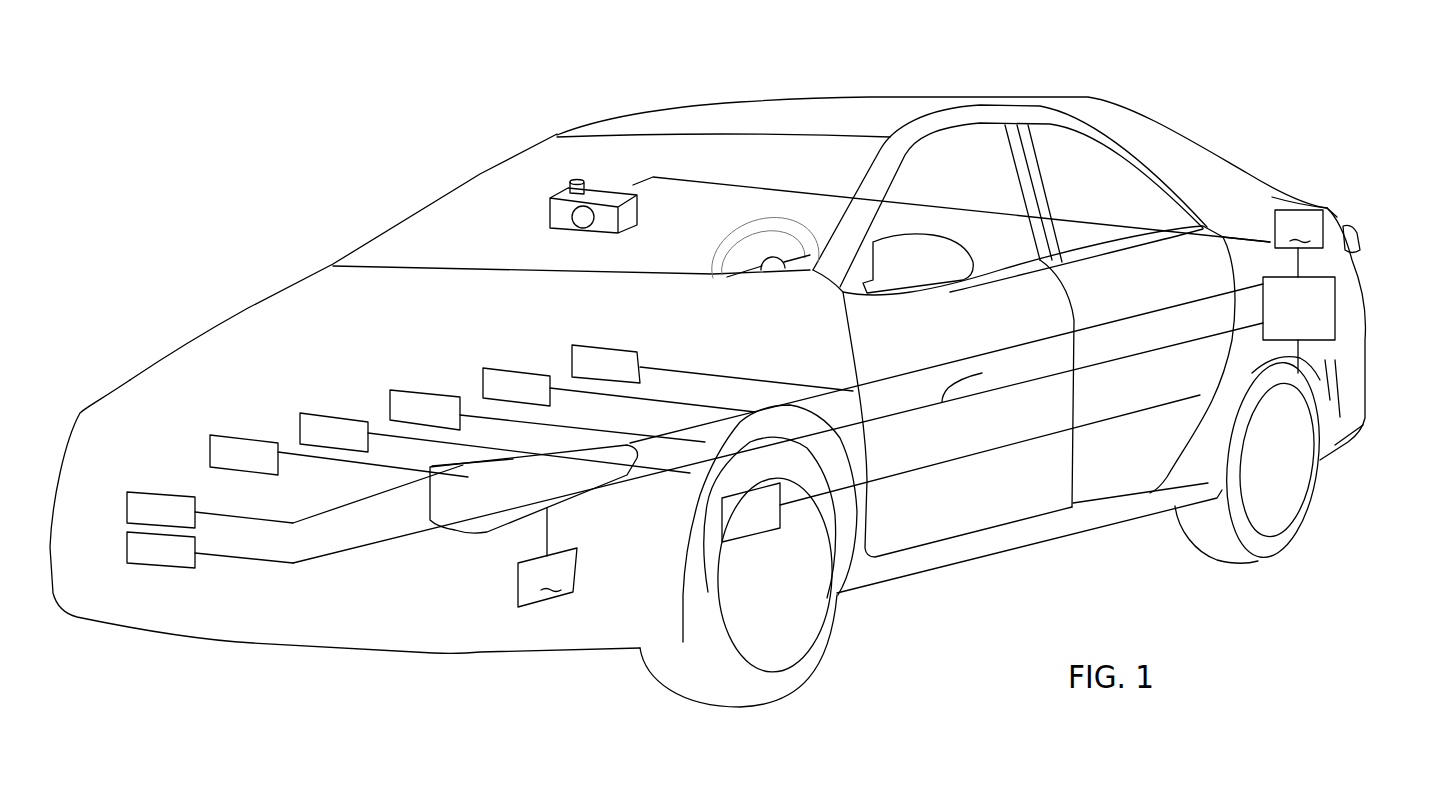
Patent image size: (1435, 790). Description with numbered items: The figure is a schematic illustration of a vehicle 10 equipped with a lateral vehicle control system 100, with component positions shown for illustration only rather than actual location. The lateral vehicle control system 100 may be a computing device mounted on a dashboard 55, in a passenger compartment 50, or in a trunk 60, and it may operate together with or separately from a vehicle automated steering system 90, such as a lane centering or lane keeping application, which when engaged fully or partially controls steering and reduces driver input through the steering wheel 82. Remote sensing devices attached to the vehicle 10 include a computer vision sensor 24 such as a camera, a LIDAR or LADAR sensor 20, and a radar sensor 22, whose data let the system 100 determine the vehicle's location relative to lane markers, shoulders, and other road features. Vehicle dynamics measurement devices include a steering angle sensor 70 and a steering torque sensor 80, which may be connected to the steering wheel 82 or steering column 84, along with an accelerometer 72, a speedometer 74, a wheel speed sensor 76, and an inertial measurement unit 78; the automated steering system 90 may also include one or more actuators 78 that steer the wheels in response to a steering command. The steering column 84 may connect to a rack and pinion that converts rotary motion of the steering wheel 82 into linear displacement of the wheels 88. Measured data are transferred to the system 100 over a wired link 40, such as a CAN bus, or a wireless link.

The vehicle 10 is at (248, 308).
The LIDAR and/or LADAR sensor 20 is at (172, 565).
The radar sensor 22 is at (167, 493).
The computer vision sensor 24 is at (550, 222).
The wired link 40 is at (717, 183).
The passenger compartment 50 is at (665, 115).
The dashboard 55 is at (395, 267).
The trunk 60 is at (1330, 207).
The steering angle sensor 70 is at (483, 380).
The accelerometer 72 is at (390, 397).
The speedometer 74 is at (300, 423).
The wheel speed sensor 76 is at (747, 543).
The actuator / inertial measurement unit 78 is at (210, 445).
The steering torque sensor 80 is at (572, 350).
The steering wheel 82 is at (718, 248).
The steering column 84 is at (763, 270).
The wheels 88 is at (793, 620).
The vehicle automated steering system 90 is at (1299, 243).
The lateral vehicle control system 100 is at (1337, 308).